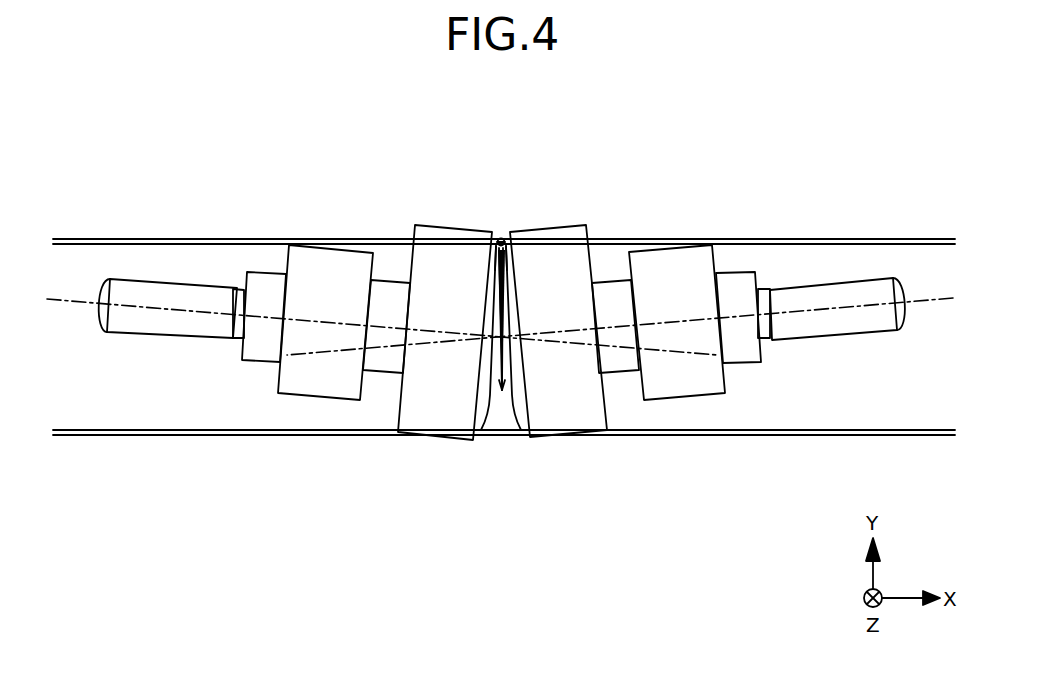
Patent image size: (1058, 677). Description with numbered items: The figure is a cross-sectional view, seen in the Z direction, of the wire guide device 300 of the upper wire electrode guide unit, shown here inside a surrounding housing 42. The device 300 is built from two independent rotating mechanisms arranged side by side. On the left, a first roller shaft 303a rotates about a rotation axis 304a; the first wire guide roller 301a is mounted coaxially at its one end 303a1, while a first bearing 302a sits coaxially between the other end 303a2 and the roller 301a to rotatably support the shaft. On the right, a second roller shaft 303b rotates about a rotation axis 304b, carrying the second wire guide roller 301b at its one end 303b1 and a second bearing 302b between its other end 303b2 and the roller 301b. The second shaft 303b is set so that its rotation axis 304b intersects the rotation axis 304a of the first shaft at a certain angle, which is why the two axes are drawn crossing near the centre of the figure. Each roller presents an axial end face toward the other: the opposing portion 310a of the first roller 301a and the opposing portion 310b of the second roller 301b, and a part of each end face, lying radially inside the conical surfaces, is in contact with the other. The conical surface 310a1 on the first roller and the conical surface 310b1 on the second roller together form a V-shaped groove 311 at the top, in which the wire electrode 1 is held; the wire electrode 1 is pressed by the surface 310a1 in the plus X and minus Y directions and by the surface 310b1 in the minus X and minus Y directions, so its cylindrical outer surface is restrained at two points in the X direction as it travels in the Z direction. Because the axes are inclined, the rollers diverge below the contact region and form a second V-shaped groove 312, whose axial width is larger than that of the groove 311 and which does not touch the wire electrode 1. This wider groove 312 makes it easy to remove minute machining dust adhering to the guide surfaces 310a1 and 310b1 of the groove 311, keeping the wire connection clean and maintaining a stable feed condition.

The wire electrode 1 is at (500, 238).
The housing rails 42 is at (773, 408).
The wire guide device 300 is at (522, 113).
The first wire guide roller 301a is at (425, 422).
The second wire guide roller 301b is at (575, 420).
The first bearing 302a is at (317, 397).
The second bearing 302b is at (683, 397).
The first roller shaft 303a is at (158, 383).
The one end of the first roller shaft 303a1 is at (395, 337).
The another end of the first roller shaft 303a2 is at (105, 332).
The second roller shaft 303b is at (847, 382).
The one end of the second roller shaft 303b1 is at (597, 337).
The another end of the second roller shaft 303b2 is at (905, 330).
The rotation axis 304a is at (64, 300).
The rotation axis 304b is at (932, 300).
The opposing portion 310a is at (409, 356).
The conical surface 310a1 is at (497, 245).
The opposing portion 310b is at (597, 356).
The conical surface 310b1 is at (505, 245).
The groove 311 is at (519, 212).
The groove 312 is at (501, 400).